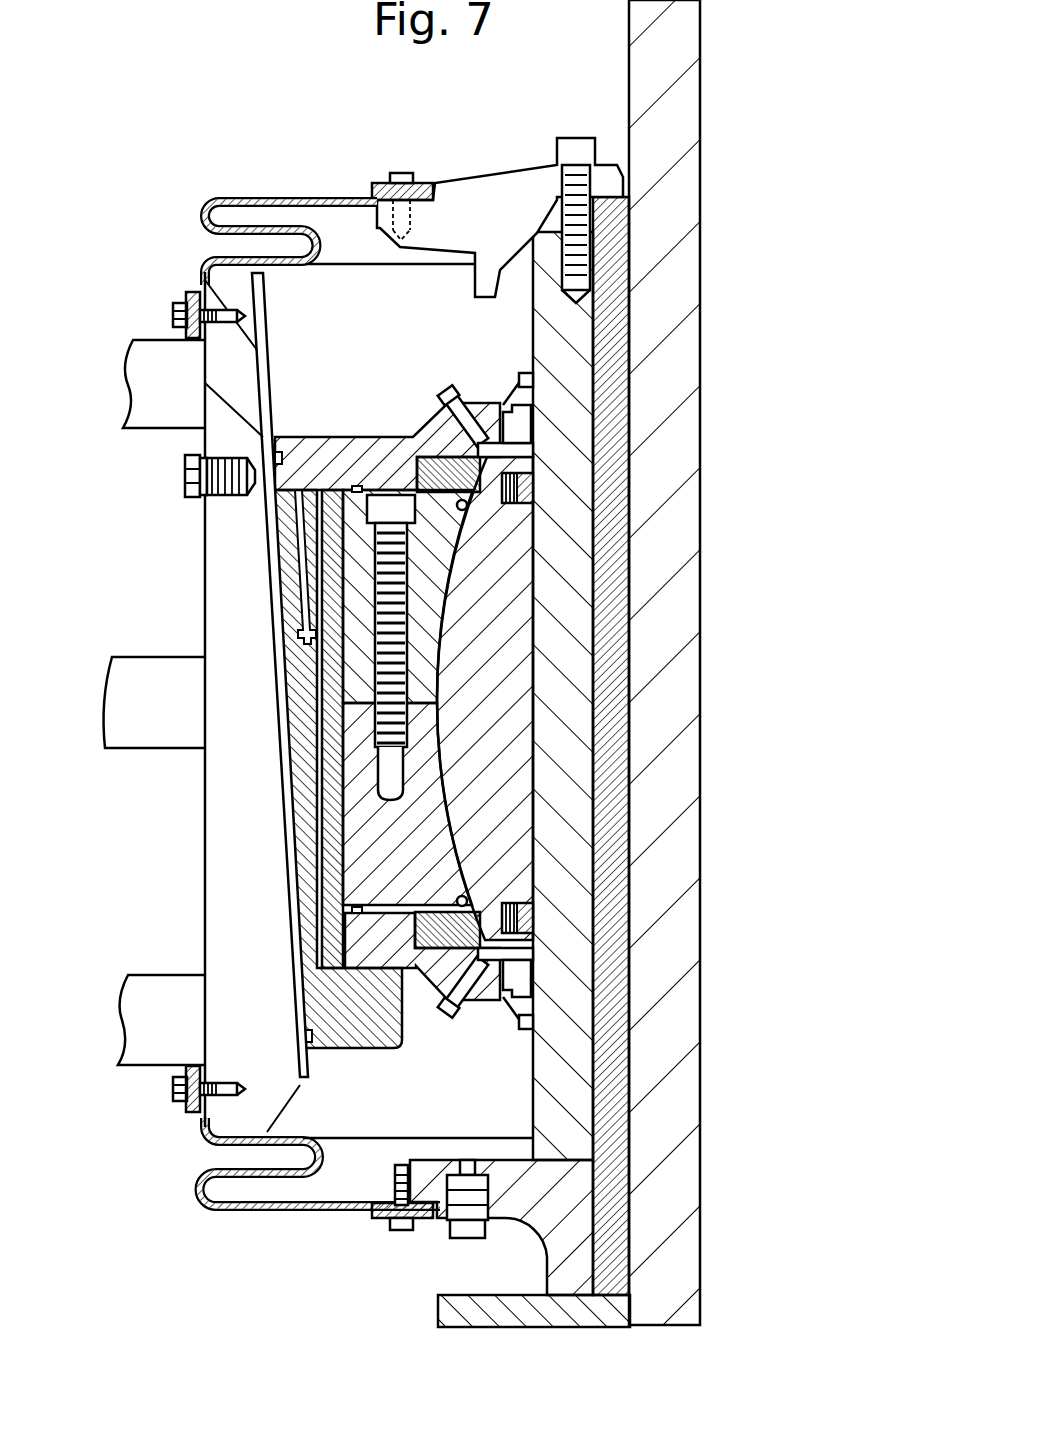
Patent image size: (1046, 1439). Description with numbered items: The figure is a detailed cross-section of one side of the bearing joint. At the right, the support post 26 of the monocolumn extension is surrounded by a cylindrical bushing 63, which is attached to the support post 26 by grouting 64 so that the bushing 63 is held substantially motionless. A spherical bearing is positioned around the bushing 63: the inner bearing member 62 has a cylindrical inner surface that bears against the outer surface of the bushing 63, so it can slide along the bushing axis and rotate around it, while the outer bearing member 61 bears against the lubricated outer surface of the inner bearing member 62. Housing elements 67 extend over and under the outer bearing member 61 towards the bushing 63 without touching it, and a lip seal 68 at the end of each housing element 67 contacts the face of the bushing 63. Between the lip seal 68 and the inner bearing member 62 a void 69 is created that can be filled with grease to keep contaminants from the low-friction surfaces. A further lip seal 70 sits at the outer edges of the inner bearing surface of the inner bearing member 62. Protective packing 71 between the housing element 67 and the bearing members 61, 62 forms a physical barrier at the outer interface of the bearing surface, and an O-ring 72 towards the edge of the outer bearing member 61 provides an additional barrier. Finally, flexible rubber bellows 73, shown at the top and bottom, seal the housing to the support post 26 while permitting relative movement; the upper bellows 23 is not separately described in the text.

The upper bellows 23 is at (226, 196).
The support post 26 is at (668, 198).
The outer bearing member 61 is at (355, 786).
The inner bearing member 62 is at (520, 740).
The cylindrical bushing 63 is at (572, 462).
The grouting 64 is at (615, 292).
The housing element 67 is at (305, 443).
The lip seal 68 is at (520, 378).
The void 69 is at (570, 408).
The lip seal 70 is at (530, 492).
The protective packing 71 is at (425, 456).
The O-ring 72 is at (458, 508).
The flexible rubber bellows 73 is at (240, 1212).